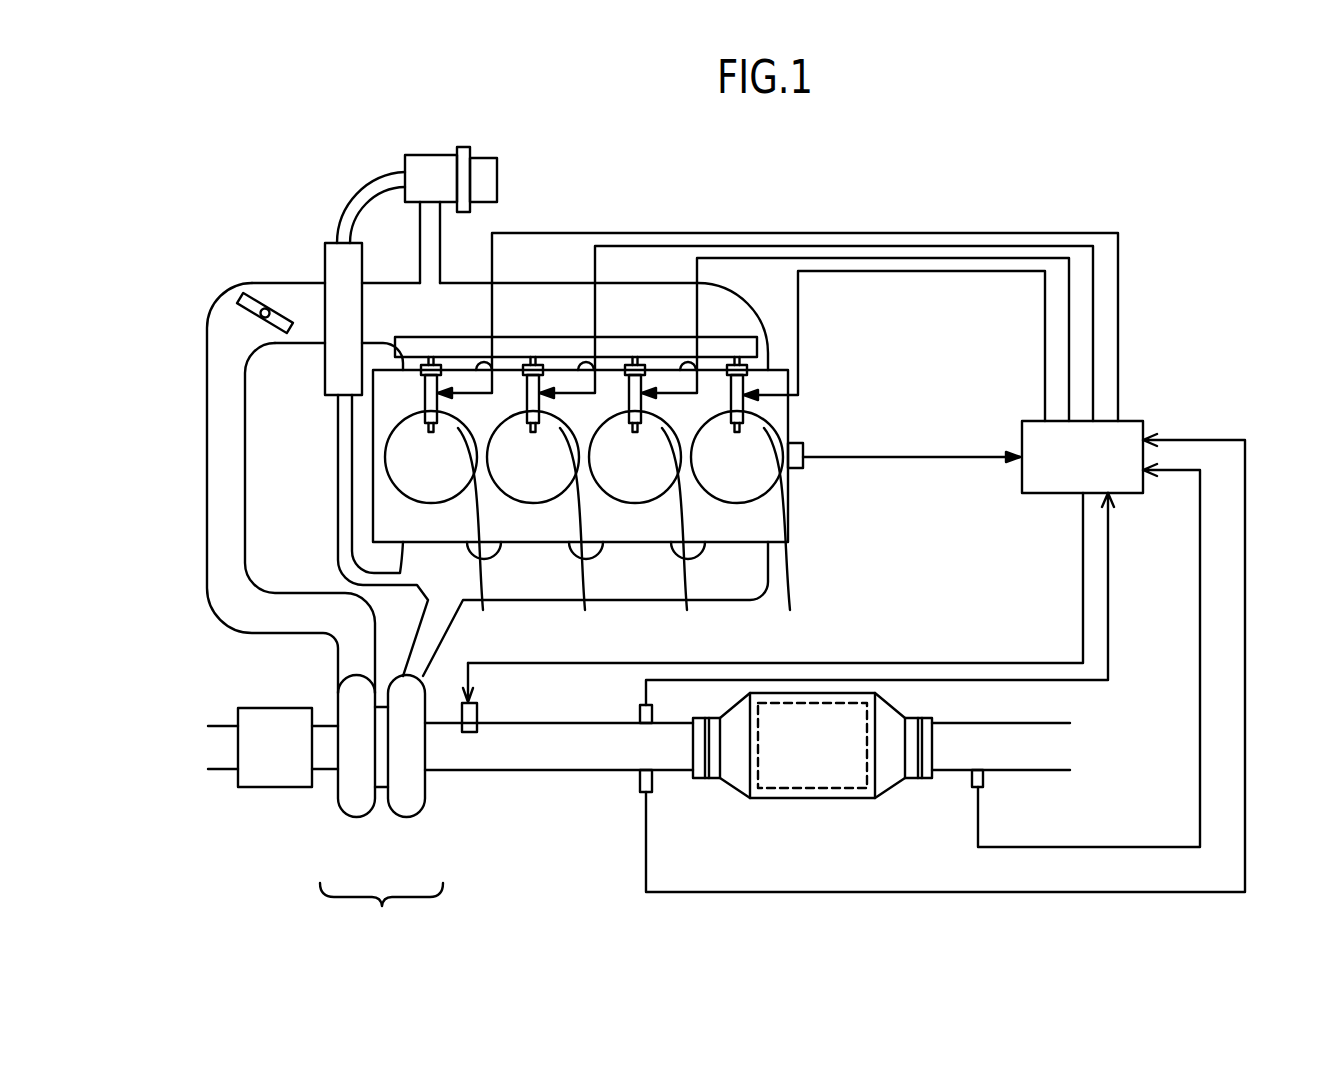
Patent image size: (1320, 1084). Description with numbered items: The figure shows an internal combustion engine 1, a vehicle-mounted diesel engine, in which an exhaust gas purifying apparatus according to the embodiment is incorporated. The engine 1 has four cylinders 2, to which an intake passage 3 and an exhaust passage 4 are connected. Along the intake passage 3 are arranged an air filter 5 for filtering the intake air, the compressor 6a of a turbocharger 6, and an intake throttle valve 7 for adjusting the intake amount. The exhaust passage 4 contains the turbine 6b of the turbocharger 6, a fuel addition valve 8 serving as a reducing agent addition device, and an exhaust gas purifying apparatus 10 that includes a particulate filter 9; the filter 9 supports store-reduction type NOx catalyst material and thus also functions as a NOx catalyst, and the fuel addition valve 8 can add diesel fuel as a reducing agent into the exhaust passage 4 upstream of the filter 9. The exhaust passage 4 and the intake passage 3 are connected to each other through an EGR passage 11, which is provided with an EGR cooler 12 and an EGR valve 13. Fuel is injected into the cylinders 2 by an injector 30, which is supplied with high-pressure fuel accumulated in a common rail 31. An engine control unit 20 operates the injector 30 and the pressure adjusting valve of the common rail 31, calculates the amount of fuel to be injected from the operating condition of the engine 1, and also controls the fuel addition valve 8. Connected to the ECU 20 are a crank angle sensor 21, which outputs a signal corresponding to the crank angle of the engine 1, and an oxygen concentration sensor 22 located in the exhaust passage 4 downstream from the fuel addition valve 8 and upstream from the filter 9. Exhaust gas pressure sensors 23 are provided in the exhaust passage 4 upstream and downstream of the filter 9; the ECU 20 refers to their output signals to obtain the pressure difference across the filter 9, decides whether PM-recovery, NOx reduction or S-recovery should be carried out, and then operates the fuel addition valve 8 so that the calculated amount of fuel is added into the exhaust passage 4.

The internal combustion engine 1 is at (794, 190).
The cylinders 2 is at (407, 483).
The intake passage 3 is at (207, 434).
The exhaust passage 4 is at (640, 600).
The air filter 5 is at (272, 789).
The turbocharger 6 is at (381, 919).
The compressor 6a is at (358, 818).
The turbine 6b is at (410, 818).
The intake throttle valve 7 is at (254, 296).
The fuel addition valve 8 is at (480, 712).
The particulate filter 9 is at (773, 790).
The exhaust gas purifying apparatus 10 is at (838, 800).
The EGR passage 11 is at (337, 480).
The EGR cooler 12 is at (325, 250).
The EGR valve 13 is at (437, 152).
The engine control unit (ECU) 20 is at (1145, 428).
The crank angle sensor 21 is at (806, 447).
The oxygen concentration sensor 22 is at (640, 714).
The exhaust gas pressure sensors 23 is at (641, 782).
The injector 30 is at (637, 540).
The common rail 31 is at (745, 334).